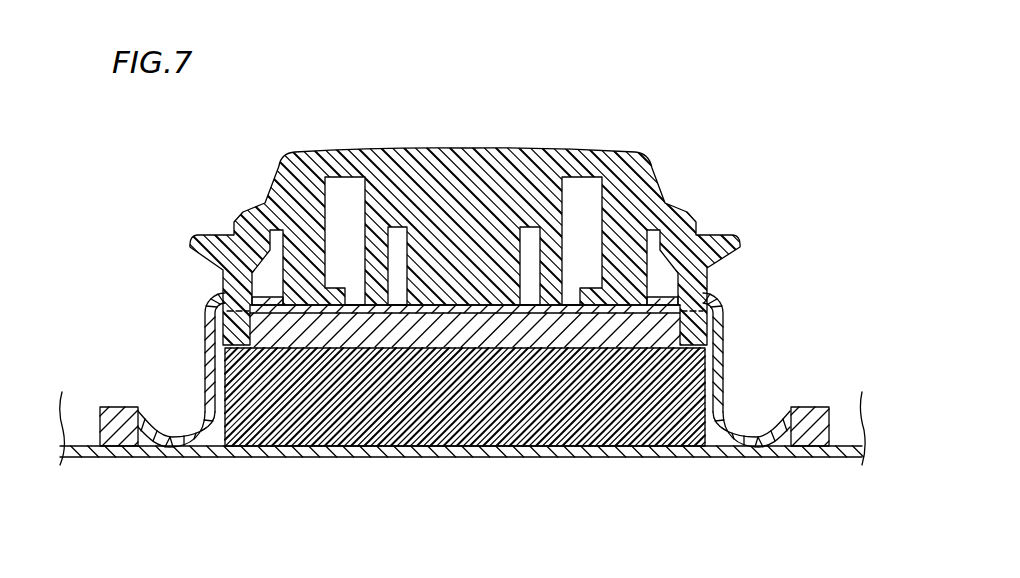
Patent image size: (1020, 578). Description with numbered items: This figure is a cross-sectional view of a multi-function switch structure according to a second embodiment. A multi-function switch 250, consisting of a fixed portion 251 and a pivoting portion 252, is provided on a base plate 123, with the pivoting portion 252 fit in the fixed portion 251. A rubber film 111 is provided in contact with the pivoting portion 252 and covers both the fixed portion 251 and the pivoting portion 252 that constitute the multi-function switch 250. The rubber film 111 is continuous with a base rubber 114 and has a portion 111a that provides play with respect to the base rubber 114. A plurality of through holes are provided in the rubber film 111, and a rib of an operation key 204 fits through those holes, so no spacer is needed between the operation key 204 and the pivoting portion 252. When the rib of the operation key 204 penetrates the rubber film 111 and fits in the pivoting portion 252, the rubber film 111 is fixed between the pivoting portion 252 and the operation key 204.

The operation key 204 is at (480, 185).
The rubber film 111 is at (205, 339).
The portion providing play 111a is at (169, 440).
The base rubber 114 is at (117, 407).
The multi-function switch 250 is at (465, 429).
The fixed portion 251 is at (521, 397).
The pivoting portion 252 is at (459, 328).
The base plate 123 is at (631, 457).